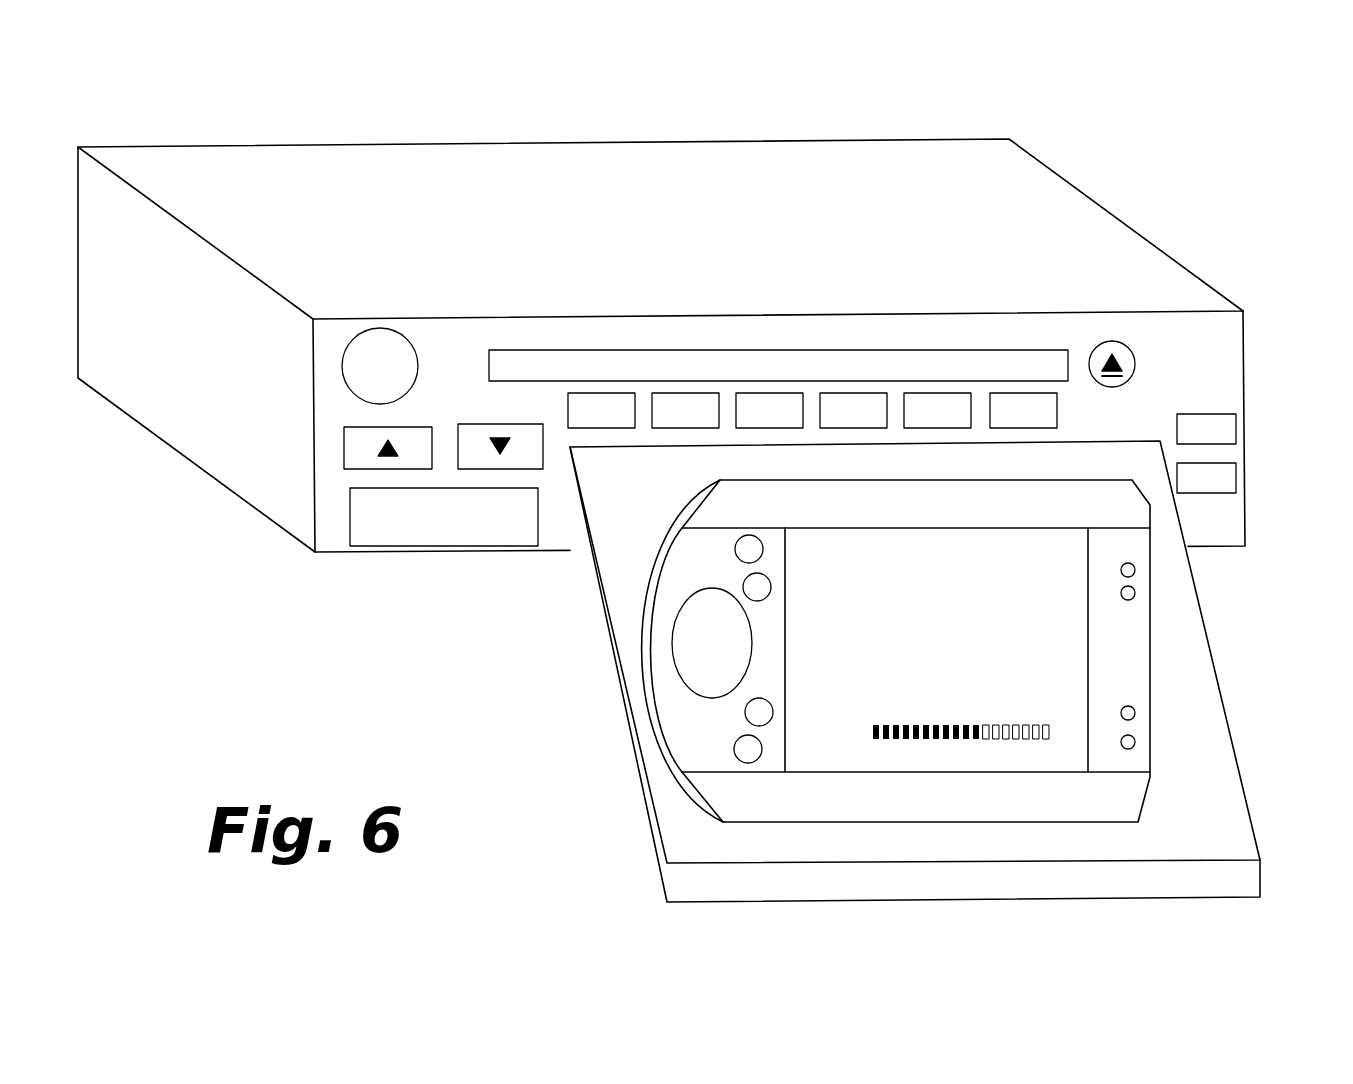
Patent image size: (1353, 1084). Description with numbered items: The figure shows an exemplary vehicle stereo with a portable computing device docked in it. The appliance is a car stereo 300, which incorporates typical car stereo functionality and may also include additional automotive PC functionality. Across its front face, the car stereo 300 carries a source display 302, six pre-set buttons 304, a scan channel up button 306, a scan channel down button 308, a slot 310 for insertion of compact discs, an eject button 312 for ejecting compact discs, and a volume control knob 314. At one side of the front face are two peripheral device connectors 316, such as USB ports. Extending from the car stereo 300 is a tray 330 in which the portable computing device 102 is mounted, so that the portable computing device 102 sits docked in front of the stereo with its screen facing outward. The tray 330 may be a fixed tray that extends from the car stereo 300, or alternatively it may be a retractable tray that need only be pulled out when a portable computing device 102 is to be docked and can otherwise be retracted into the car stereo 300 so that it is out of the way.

The car stereo 300 is at (134, 134).
The source display 302 is at (388, 542).
The pre-set buttons 304 is at (1065, 391).
The scan channel up button 306 is at (347, 458).
The scan channel down button 308 is at (460, 425).
The slot 310 is at (637, 355).
The eject button 312 is at (1106, 343).
The volume control knob 314 is at (352, 363).
The peripheral device connectors 316 is at (1232, 420).
The tray 330 is at (675, 855).
The portable computing device 102 is at (640, 610).